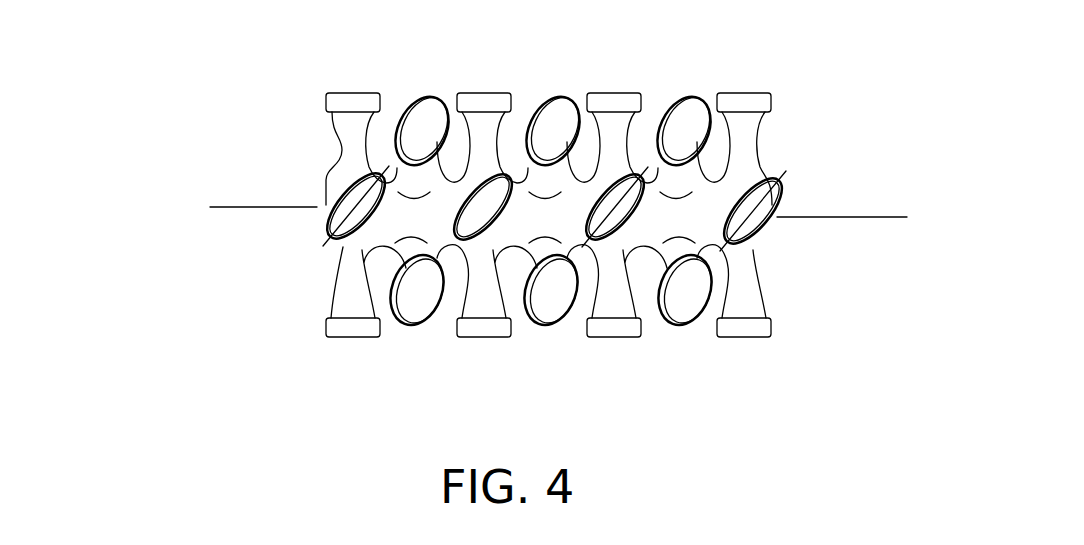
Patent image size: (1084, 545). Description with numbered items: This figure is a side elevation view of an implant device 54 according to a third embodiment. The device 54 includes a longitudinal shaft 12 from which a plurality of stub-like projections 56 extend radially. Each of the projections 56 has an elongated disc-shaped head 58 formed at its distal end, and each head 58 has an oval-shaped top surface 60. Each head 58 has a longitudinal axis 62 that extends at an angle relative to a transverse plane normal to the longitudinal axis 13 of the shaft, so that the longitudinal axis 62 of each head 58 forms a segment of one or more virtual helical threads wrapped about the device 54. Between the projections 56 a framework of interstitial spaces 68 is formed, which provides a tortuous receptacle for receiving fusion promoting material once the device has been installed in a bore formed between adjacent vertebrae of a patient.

The implant device 54 is at (788, 86).
The stub-like projections 56 is at (752, 283).
The elongated disc-shaped head 58 is at (355, 325).
The oval-shaped top surface 60 is at (418, 120).
The longitudinal axis of head 62 is at (318, 245).
The interstitial spaces 68 is at (508, 158).
The longitudinal shaft 12 is at (360, 238).
The longitudinal axis of the shaft 13 is at (867, 218).